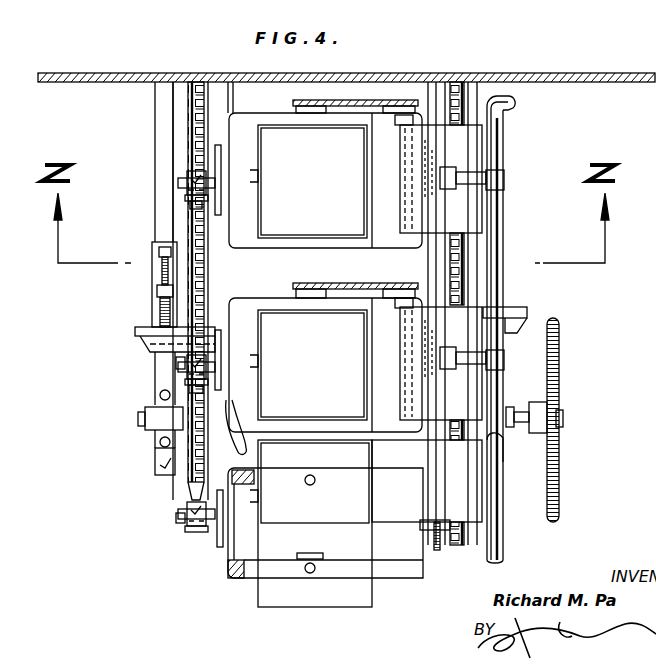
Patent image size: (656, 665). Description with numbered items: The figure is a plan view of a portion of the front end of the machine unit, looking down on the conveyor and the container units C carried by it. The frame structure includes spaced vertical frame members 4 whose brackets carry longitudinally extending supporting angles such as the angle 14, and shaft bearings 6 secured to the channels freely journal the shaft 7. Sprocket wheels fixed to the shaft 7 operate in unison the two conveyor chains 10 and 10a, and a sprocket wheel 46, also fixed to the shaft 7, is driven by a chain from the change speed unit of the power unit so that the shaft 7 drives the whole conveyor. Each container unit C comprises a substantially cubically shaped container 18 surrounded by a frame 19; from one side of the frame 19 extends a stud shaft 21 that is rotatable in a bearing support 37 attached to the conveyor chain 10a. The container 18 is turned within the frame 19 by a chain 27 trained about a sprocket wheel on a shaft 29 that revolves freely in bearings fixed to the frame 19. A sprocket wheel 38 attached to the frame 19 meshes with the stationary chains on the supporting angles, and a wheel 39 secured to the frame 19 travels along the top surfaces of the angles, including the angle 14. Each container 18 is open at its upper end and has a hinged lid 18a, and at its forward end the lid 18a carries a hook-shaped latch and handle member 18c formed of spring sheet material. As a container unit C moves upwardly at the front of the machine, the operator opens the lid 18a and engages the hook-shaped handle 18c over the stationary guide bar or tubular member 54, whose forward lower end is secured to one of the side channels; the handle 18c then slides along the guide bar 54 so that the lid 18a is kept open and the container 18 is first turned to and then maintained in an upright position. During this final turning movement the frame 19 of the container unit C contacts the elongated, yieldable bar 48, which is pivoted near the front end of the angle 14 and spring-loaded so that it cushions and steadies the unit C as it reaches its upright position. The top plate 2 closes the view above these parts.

The ceiling/top plate 2 is at (84, 73).
The vertical frame member 4 is at (143, 327).
The shaft bearing 6 is at (140, 437).
The shaft 7 is at (515, 418).
The conveyor chain 10 is at (463, 288).
The conveyor chain 10a is at (190, 125).
The supporting angle 14 is at (208, 268).
The container 18 is at (318, 625).
The lid 18a is at (464, 143).
The hook-shaped latch and handle member 18c is at (505, 183).
The container surrounding frame 19 is at (255, 113).
The stud shaft 21 is at (178, 363).
The chain 27 is at (360, 100).
The shaft 29 is at (403, 126).
The bearing support 37 is at (188, 183).
The sprocket wheel 38 is at (443, 200).
The wheel 39 is at (196, 205).
The sprocket wheel 46 is at (560, 343).
The elongated bar 48 is at (222, 460).
The stationary guide bar 54 is at (500, 218).
The container unit C is at (372, 615).